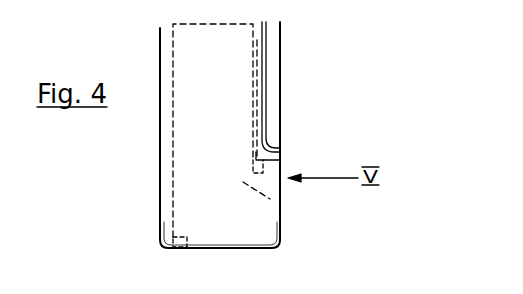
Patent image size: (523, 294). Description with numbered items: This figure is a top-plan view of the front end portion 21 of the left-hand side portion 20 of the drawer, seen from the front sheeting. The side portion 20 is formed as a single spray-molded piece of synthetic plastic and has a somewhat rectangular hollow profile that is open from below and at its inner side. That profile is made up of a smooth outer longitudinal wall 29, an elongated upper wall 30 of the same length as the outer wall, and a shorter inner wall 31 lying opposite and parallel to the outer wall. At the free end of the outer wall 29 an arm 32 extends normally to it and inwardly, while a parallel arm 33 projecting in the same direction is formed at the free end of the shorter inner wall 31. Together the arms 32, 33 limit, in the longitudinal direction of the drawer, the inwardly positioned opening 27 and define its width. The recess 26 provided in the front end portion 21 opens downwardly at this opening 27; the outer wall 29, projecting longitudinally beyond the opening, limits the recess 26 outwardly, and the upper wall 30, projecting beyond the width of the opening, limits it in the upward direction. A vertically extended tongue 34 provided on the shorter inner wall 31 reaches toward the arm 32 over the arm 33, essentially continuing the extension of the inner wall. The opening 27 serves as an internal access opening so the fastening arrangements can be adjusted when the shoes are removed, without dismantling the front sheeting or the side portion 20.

The side portion 20 is at (160, 80).
The front end portion 21 is at (252, 249).
The recess 26 is at (281, 203).
The opening 27 is at (281, 157).
The longitudinal wall 29 is at (163, 233).
The upper wall 30 is at (242, 231).
The inner wall 31 is at (263, 97).
The arm 32 is at (178, 250).
The arm 33 is at (281, 150).
The tongue 34 is at (258, 167).